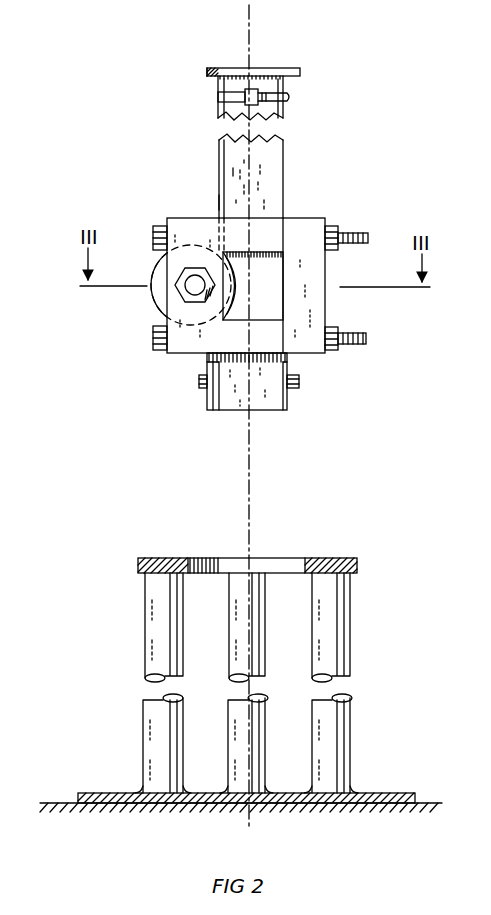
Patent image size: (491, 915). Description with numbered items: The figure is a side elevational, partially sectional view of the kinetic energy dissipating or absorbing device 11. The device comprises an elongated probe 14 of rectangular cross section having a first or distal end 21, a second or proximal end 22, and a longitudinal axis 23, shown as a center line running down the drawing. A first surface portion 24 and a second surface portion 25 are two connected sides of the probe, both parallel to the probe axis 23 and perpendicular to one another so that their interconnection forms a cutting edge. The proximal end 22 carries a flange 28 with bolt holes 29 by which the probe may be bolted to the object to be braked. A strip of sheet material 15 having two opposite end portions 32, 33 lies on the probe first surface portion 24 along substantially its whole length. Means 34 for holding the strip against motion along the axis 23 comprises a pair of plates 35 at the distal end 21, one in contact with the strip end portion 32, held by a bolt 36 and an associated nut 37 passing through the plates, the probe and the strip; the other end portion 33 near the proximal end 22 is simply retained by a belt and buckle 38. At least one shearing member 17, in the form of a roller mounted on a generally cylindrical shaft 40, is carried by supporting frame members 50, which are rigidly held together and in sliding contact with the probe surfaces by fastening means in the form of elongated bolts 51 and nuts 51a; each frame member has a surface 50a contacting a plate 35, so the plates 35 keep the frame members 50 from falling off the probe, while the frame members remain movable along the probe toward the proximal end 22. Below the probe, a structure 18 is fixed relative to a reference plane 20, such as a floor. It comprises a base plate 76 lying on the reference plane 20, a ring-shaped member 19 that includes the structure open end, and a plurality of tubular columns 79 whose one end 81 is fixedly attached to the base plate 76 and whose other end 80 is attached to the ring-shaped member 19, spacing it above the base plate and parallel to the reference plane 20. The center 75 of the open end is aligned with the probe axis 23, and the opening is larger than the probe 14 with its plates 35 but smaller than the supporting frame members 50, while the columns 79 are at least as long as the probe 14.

The kinetic energy dissipating or absorbing device 11 is at (103, 102).
The elongated probe 14 is at (288, 148).
The strip of sheet material 15 is at (216, 150).
The shearing member 17 is at (156, 268).
The structure 18 is at (106, 593).
The ring-shaped member 19 is at (330, 558).
The reference plane 20 is at (65, 801).
The probe first or distal end 21 is at (268, 410).
The probe second or proximal end 22 is at (272, 75).
The longitudinal axis 23 is at (254, 23).
The first surface portion 24 is at (221, 198).
The second surface portion 25 is at (233, 172).
The flange 28 is at (233, 68).
The bolt holes 29 is at (212, 76).
The strip end portion 32 is at (215, 395).
The strip end portion 33 is at (217, 107).
The means for holding the strip 34 is at (205, 407).
The plates 35 is at (207, 364).
The bolt 36 is at (202, 382).
The nut 37 is at (300, 380).
The belt and buckle 38 is at (295, 97).
The shaft 40 is at (185, 292).
The supporting frame members 50 is at (300, 215).
The frame member surface 50a is at (200, 356).
The bolts 51 is at (352, 233).
The nuts 51a is at (340, 349).
The center of the structure open end 75 is at (250, 570).
The base plate 76 is at (110, 793).
The tubular columns 79 is at (145, 655).
The column end 80 is at (183, 575).
The column end 81 is at (178, 790).